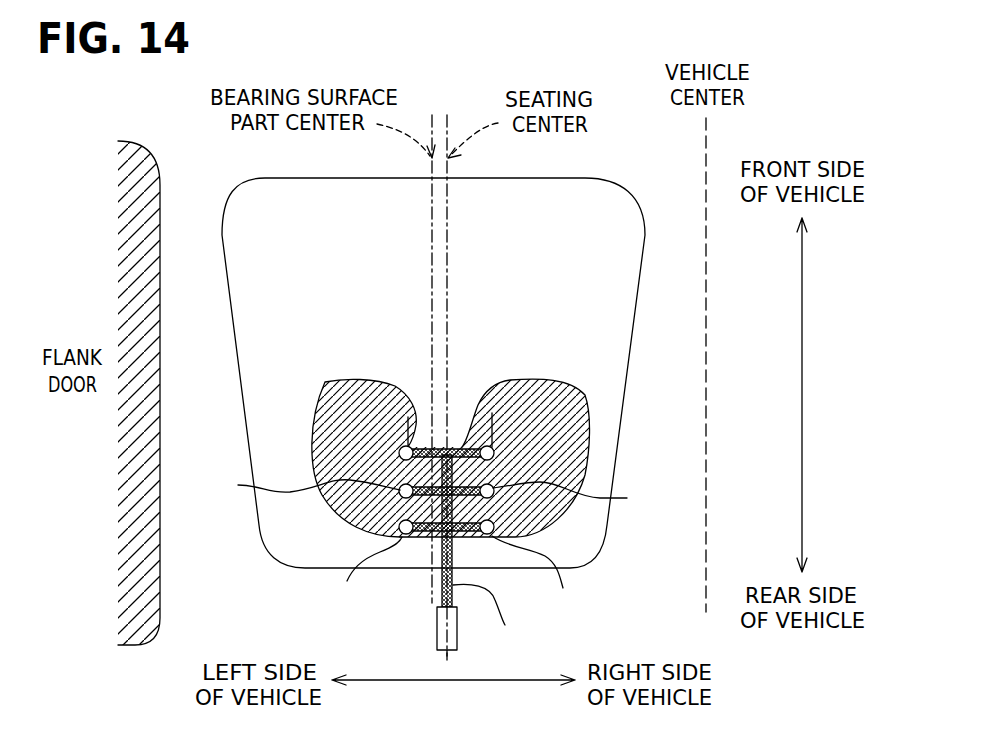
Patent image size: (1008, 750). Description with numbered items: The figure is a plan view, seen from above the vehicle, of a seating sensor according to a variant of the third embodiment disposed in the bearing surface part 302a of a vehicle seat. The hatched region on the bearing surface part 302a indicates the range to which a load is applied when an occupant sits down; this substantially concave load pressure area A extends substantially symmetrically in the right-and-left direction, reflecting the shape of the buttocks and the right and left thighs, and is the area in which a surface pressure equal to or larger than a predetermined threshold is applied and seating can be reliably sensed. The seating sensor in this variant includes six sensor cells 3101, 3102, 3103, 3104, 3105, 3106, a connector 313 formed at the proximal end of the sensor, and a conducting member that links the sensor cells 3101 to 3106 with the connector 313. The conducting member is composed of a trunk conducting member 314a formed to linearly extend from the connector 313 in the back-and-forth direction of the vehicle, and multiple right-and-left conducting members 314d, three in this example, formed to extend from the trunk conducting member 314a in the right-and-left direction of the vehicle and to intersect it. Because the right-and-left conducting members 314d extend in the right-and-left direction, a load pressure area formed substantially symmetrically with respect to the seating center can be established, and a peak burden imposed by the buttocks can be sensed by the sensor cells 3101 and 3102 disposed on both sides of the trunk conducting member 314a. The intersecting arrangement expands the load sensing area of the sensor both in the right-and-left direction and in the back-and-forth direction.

The bearing surface part 302a is at (322, 243).
The sensor cell 3101 is at (508, 380).
The sensor cell 3102 is at (404, 396).
The sensor cell 3103 is at (585, 496).
The sensor cell 3104 is at (291, 483).
The sensor cell 3105 is at (545, 575).
The sensor cell 3106 is at (362, 572).
The connector 313 is at (437, 630).
The trunk conducting member 314a is at (498, 618).
The right-and-left conducting members 314d is at (460, 445).
The load pressure area A is at (365, 439).